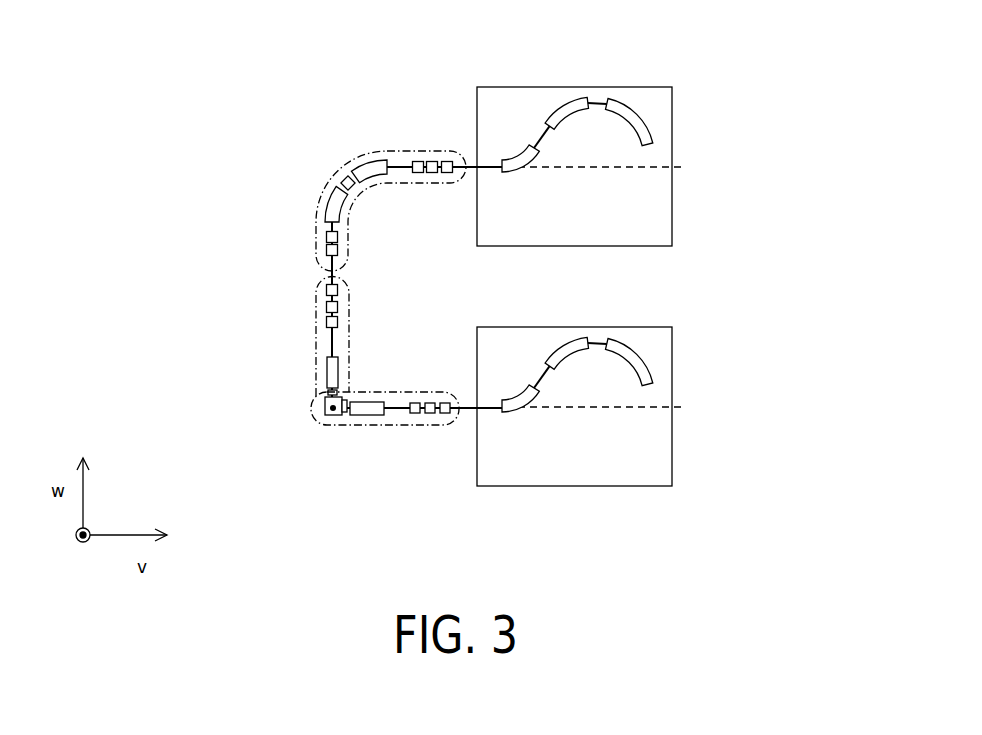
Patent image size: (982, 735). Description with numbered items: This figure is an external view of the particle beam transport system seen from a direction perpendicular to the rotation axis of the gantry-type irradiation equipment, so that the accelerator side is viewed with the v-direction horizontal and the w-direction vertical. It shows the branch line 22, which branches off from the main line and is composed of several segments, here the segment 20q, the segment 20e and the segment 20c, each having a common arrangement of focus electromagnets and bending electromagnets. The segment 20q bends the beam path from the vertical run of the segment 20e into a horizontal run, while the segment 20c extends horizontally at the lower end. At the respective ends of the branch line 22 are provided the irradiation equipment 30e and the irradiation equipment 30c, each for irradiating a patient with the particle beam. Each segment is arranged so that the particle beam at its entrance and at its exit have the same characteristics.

The branch line 22 is at (263, 148).
The segment 20q is at (400, 152).
The segment 20e is at (350, 344).
The segment 20c is at (393, 427).
The irradiation equipment 30e is at (573, 87).
The irradiation equipment 30c is at (579, 379).